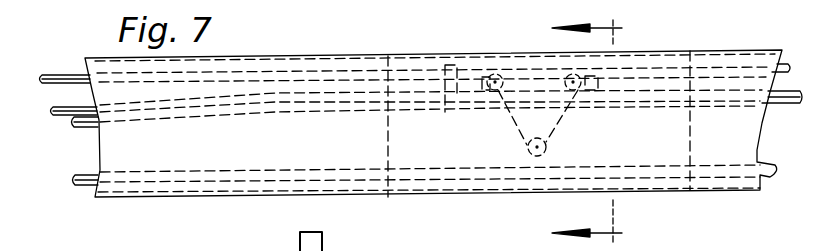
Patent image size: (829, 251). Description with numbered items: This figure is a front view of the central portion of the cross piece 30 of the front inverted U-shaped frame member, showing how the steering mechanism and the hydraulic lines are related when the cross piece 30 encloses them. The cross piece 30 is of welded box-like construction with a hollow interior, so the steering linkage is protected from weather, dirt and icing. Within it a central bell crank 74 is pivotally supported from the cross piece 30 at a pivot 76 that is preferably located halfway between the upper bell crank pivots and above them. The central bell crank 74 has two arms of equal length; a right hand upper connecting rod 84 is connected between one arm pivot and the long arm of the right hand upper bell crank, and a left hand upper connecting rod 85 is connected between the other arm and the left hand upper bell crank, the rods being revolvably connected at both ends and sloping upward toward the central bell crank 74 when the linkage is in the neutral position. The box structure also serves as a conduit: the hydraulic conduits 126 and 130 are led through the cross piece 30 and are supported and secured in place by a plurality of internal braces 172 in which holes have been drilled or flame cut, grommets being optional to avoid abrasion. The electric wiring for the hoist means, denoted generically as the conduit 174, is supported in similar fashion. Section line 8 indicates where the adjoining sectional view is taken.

The cross piece 30 is at (350, 56).
The internal brace 172 is at (393, 153).
The central bell crank 74 is at (559, 119).
The pivot 76 is at (544, 146).
The left hand upper connecting rod 85 is at (660, 90).
The hydraulic conduit 130 is at (50, 75).
The hydraulic conduit 126 is at (55, 108).
The right hand upper connecting rod 84 is at (82, 125).
The conduit 174 is at (72, 183).
The section line 8- 8 is at (599, 133).